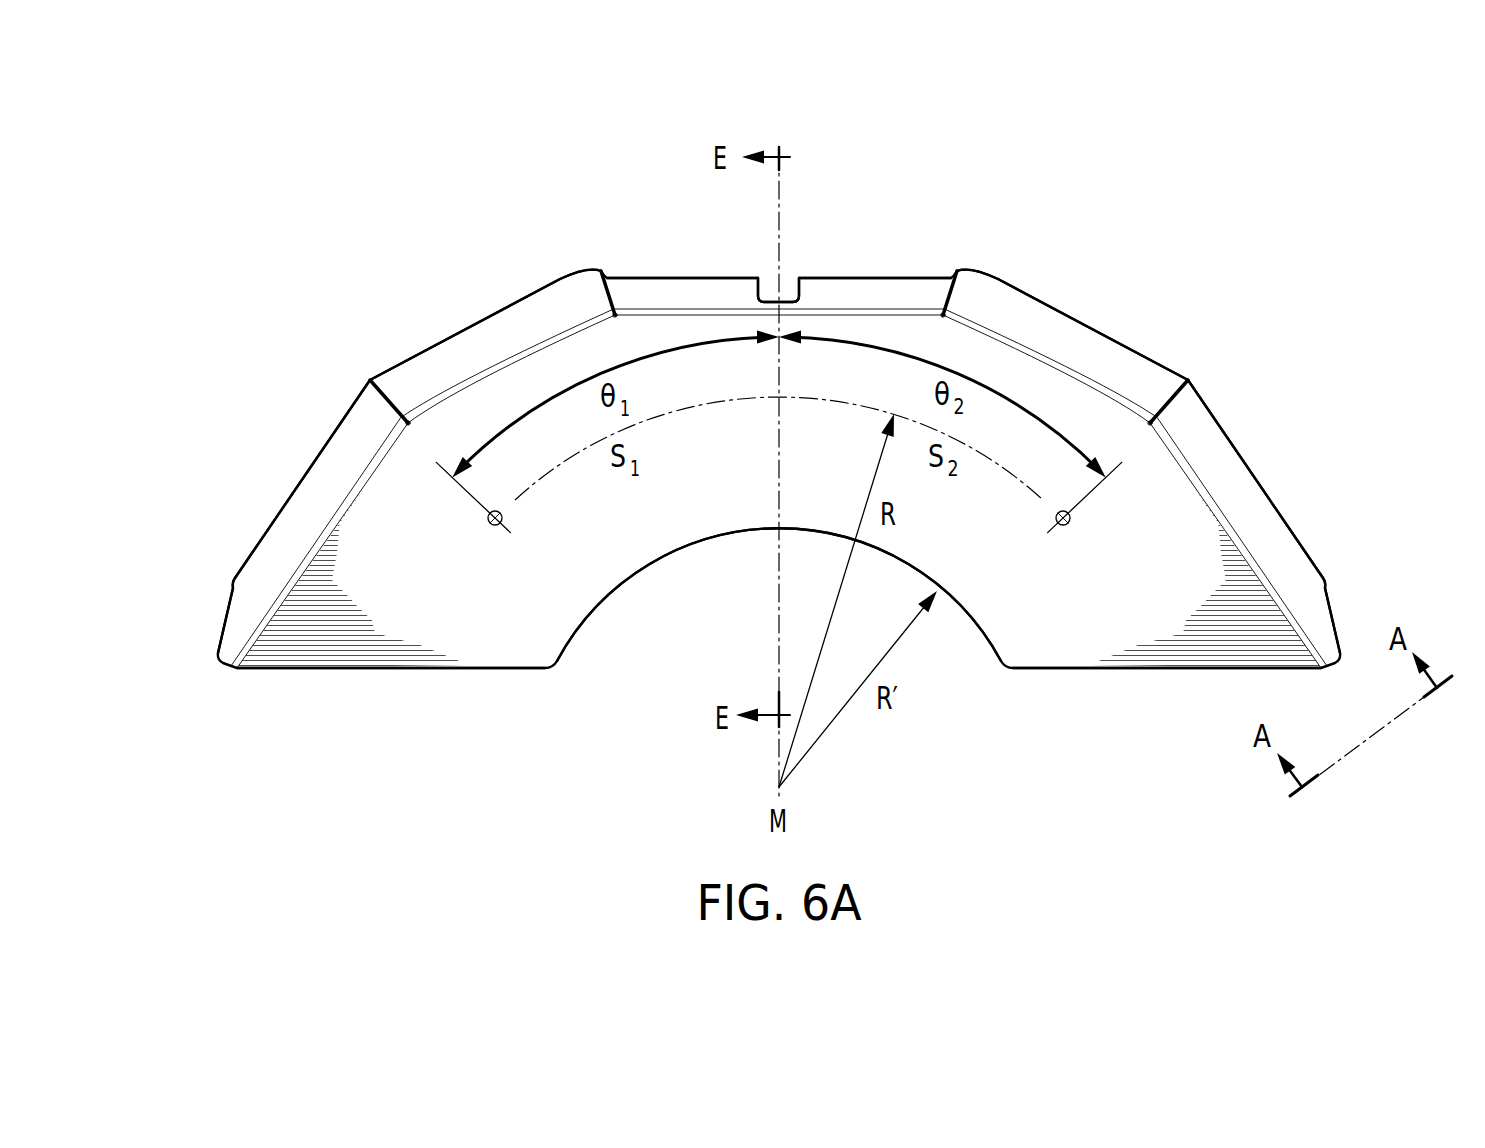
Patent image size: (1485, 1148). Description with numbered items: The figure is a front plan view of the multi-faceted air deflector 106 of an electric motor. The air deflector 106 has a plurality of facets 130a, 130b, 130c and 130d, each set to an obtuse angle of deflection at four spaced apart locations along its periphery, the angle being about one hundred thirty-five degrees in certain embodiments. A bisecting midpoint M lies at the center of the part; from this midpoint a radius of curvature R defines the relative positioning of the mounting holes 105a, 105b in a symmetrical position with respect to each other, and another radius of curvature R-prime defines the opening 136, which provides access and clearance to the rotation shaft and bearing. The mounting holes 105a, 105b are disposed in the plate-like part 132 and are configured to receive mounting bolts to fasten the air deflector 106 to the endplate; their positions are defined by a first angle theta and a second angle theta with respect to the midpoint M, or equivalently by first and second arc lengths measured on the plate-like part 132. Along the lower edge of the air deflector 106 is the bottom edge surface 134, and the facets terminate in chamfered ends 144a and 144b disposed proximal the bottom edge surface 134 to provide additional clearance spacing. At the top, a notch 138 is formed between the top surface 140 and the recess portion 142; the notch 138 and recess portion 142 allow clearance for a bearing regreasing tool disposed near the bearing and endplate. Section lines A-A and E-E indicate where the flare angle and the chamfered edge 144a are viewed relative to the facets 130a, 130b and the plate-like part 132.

The air deflector 106 is at (1122, 200).
The facet 130a is at (296, 481).
The facet 130b is at (462, 329).
The facet 130c is at (1094, 331).
The facet 130d is at (1261, 483).
The plate-like part 132 is at (385, 668).
The bottom edge surface 134 is at (1165, 668).
The opening 136 is at (603, 600).
The notch 138 is at (793, 287).
The top surface 140 is at (677, 287).
The recess portion 142 is at (896, 264).
The chamfered end 144a is at (227, 617).
The chamfered end 144b is at (1333, 615).
The mounting hole 105a is at (488, 526).
The mounting hole 105b is at (1070, 526).